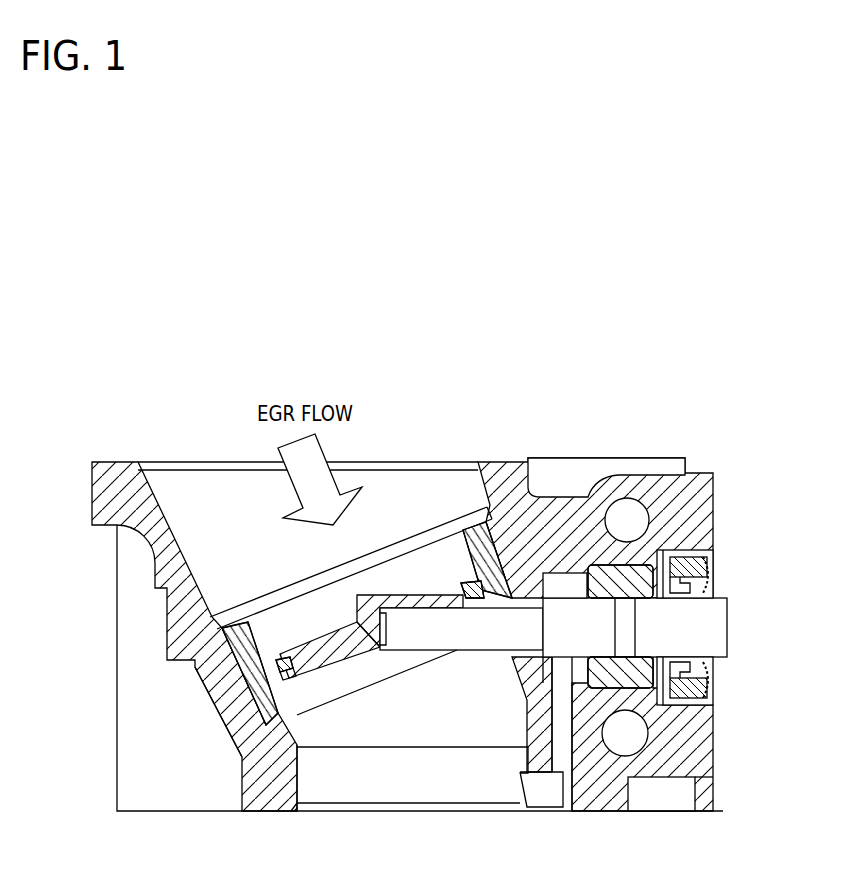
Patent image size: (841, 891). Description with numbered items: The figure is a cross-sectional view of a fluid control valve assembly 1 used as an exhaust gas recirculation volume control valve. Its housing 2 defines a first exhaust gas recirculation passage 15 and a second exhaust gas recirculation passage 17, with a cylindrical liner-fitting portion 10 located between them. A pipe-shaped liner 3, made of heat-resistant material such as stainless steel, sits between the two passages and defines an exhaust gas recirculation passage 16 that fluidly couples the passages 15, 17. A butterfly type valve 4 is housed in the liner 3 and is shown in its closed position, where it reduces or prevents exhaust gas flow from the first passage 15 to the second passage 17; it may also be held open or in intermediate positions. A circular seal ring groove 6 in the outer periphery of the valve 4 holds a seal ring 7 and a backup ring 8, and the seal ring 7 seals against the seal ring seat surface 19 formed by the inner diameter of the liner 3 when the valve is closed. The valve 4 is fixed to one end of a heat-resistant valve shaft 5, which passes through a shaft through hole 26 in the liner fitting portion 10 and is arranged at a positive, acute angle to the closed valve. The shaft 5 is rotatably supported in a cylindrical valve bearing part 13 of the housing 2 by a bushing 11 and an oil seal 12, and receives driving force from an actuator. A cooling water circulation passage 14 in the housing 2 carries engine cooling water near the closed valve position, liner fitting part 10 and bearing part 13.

The fluid control valve assembly 1 is at (90, 443).
The housing 2 is at (95, 510).
The liner 3 is at (270, 697).
The butterfly type valve 4 is at (330, 653).
The valve shaft 5 is at (708, 618).
The seal ring groove 6 is at (477, 580).
The seal ring 7 is at (268, 663).
The backup ring 8 is at (262, 686).
The liner-fitting portion 10 is at (208, 635).
The bushing 11 is at (598, 566).
The oil seal 12 is at (695, 549).
The valve bearing part 13 is at (660, 722).
The cooling water circulation passage 14 is at (630, 508).
The first exhaust gas recirculation passage 15 is at (193, 488).
The exhaust gas recirculation passage 16 is at (300, 613).
The second exhaust gas recirculation passage 17 is at (423, 777).
The seal ring seat surface 19 is at (292, 700).
The shaft through hole 26 is at (520, 598).